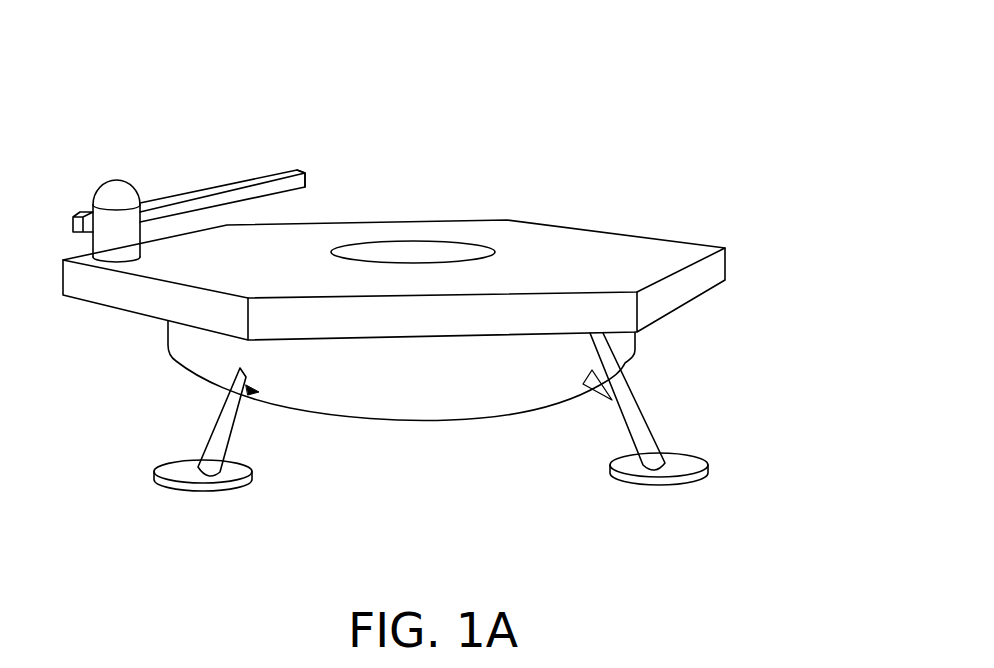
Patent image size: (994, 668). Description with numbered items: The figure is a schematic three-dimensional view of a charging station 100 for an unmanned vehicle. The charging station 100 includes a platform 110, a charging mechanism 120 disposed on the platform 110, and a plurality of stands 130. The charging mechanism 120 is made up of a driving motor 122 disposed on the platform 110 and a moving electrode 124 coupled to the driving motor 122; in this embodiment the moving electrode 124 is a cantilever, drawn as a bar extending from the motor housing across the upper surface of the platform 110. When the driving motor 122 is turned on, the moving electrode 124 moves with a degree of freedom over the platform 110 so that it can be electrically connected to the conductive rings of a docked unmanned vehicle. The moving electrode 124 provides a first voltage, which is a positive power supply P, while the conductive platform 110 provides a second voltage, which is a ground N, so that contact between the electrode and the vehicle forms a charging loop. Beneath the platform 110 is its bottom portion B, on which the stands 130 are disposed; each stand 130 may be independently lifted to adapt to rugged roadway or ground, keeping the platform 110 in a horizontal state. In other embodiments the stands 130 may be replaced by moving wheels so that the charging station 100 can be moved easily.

The charging station 100 is at (708, 107).
The platform 110 is at (537, 247).
The charging mechanism 120 is at (187, 144).
The driving motor 122 is at (112, 187).
The moving electrode 124 is at (163, 207).
The stand 130 is at (223, 430).
The ground N is at (528, 287).
The positive power supply P is at (309, 177).
The bottom portion B is at (387, 395).